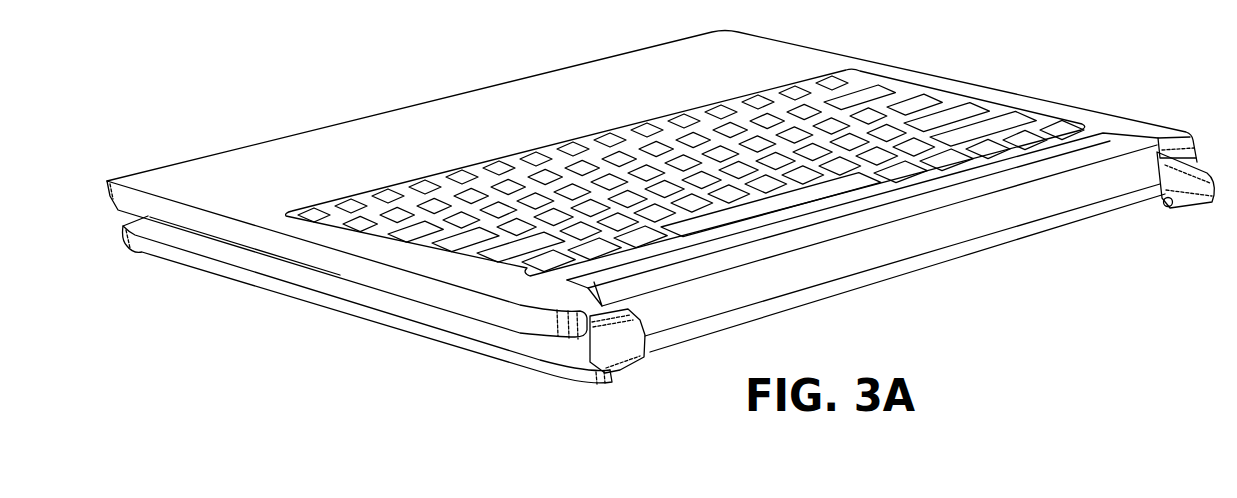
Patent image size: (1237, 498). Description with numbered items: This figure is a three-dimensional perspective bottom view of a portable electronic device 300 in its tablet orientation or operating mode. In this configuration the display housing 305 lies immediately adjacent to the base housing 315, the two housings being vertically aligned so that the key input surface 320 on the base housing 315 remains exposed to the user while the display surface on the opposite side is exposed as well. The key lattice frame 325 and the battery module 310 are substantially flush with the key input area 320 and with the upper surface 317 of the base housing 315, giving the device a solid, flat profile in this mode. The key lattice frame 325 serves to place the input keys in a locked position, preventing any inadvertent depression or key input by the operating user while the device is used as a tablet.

The portable electronic device 300 is at (310, 66).
The display housing 305 is at (372, 318).
The battery module 310 is at (893, 275).
The base housing 315 is at (167, 163).
The upper surface 317 is at (722, 66).
The key input surface 320 is at (470, 167).
The key lattice frame 325 is at (548, 269).